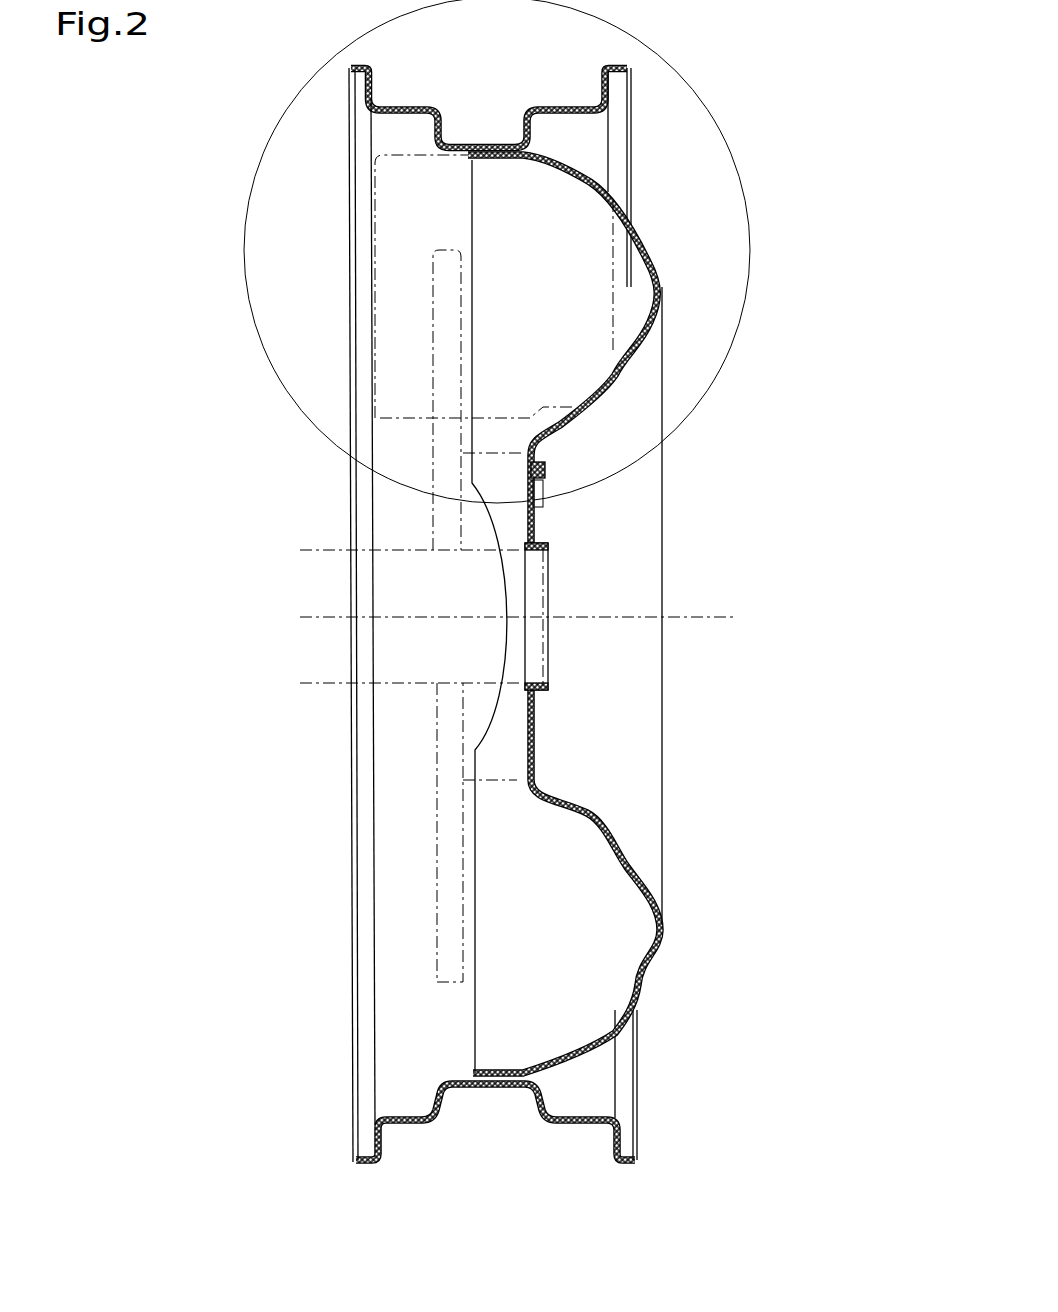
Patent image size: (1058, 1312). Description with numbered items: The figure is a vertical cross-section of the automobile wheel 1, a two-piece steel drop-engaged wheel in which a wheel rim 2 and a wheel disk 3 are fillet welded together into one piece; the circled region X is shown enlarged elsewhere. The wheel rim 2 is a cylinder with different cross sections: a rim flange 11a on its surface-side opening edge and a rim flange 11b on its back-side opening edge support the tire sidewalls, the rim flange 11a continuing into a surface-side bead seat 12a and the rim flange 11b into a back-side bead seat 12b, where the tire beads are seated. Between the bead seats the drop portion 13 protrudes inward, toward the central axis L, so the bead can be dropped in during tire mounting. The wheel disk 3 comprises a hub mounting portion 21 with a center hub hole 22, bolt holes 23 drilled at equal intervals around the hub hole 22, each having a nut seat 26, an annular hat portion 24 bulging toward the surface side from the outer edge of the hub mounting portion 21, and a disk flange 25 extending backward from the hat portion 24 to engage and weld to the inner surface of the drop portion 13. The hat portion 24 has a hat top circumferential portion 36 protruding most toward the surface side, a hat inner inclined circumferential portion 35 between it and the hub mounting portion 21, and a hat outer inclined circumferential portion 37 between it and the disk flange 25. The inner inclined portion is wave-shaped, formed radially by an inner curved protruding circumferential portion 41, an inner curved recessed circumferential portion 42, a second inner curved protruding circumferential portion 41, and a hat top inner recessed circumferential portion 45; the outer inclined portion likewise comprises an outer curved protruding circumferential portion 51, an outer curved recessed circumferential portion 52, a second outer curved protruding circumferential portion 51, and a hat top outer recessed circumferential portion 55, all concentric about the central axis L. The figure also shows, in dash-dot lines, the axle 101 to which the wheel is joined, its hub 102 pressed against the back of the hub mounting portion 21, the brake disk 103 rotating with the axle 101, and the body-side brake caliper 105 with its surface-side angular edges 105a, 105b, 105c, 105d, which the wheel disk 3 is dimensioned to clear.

The automobile wheel 1 is at (795, 385).
The wheel rim 2 is at (568, 105).
The wheel disk 3 is at (667, 937).
The rim flange 11a is at (627, 1163).
The rim flange 11b is at (362, 1165).
The surface-side bead seat 12a is at (587, 1125).
The back-side bead seat 12b is at (413, 1125).
The drop portion 13 is at (497, 1088).
The hub mounting portion 21 is at (535, 745).
The hub hole 22 is at (540, 593).
The bolt hole 23 is at (543, 497).
The hat portion 24 is at (663, 910).
The disk flange 25 is at (473, 1073).
The nut seat 26 is at (548, 508).
The hat inner inclined circumferential portion 35 is at (635, 348).
The hat top circumferential portion 36 is at (660, 285).
The hat outer inclined circumferential portion 37 is at (587, 175).
The inner curved protruding circumferential portion 41 is at (590, 812).
The inner curved recessed circumferential portion 42 is at (610, 838).
The hat top inner recessed circumferential portion 45 is at (645, 890).
The outer curved protruding circumferential portion 51 is at (633, 1037).
The outer curved recessed circumferential portion 52 is at (578, 1047).
The hat top outer recessed circumferential portion 55 is at (642, 983).
The axle 101 is at (390, 550).
The hub 102 is at (505, 780).
The brake disk 103 is at (437, 737).
The brake caliper 105 is at (613, 247).
The surface-side angular edge 105a is at (567, 403).
The surface-side angular edge 105b is at (580, 358).
The surface-side angular edge 105c is at (580, 207).
The surface-side angular edge 105d is at (560, 167).
The enlarged region X is at (272, 128).
The central axis L is at (272, 617).